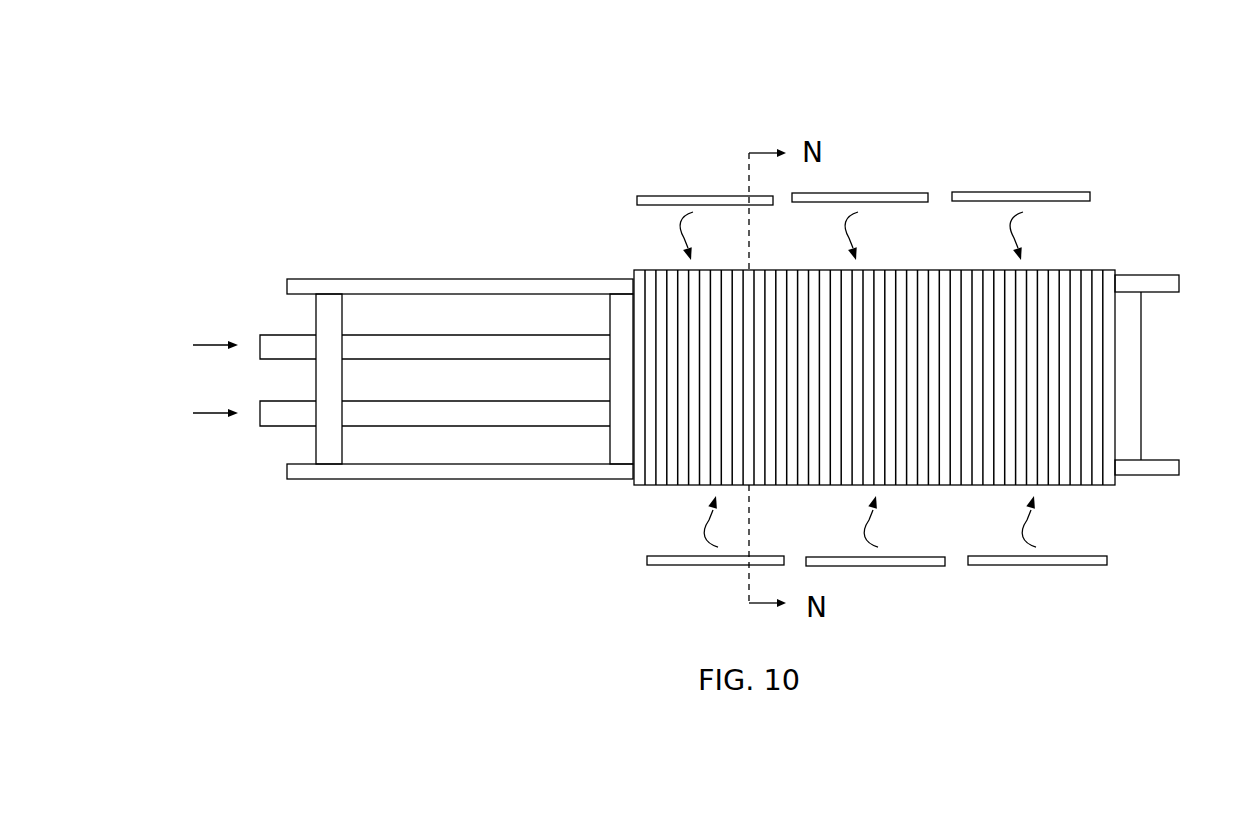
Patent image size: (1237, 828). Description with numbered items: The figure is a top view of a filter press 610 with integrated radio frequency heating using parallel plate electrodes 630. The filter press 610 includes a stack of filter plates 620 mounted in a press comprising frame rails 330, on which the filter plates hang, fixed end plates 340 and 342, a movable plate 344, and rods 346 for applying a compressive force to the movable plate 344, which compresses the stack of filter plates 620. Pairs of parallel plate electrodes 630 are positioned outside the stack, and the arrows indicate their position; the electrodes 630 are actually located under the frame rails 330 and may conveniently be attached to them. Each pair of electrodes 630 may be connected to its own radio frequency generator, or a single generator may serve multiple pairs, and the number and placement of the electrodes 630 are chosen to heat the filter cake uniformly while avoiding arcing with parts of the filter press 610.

The filter press 610 is at (576, 146).
The frame rails 330 is at (475, 282).
The fixed end plate 340 is at (322, 315).
The fixed end plate 342 is at (1127, 405).
The movable plate 344 is at (613, 323).
The rods 346 is at (292, 413).
The stack of filter plates 620 is at (653, 463).
The parallel plate electrodes 630 is at (848, 195).